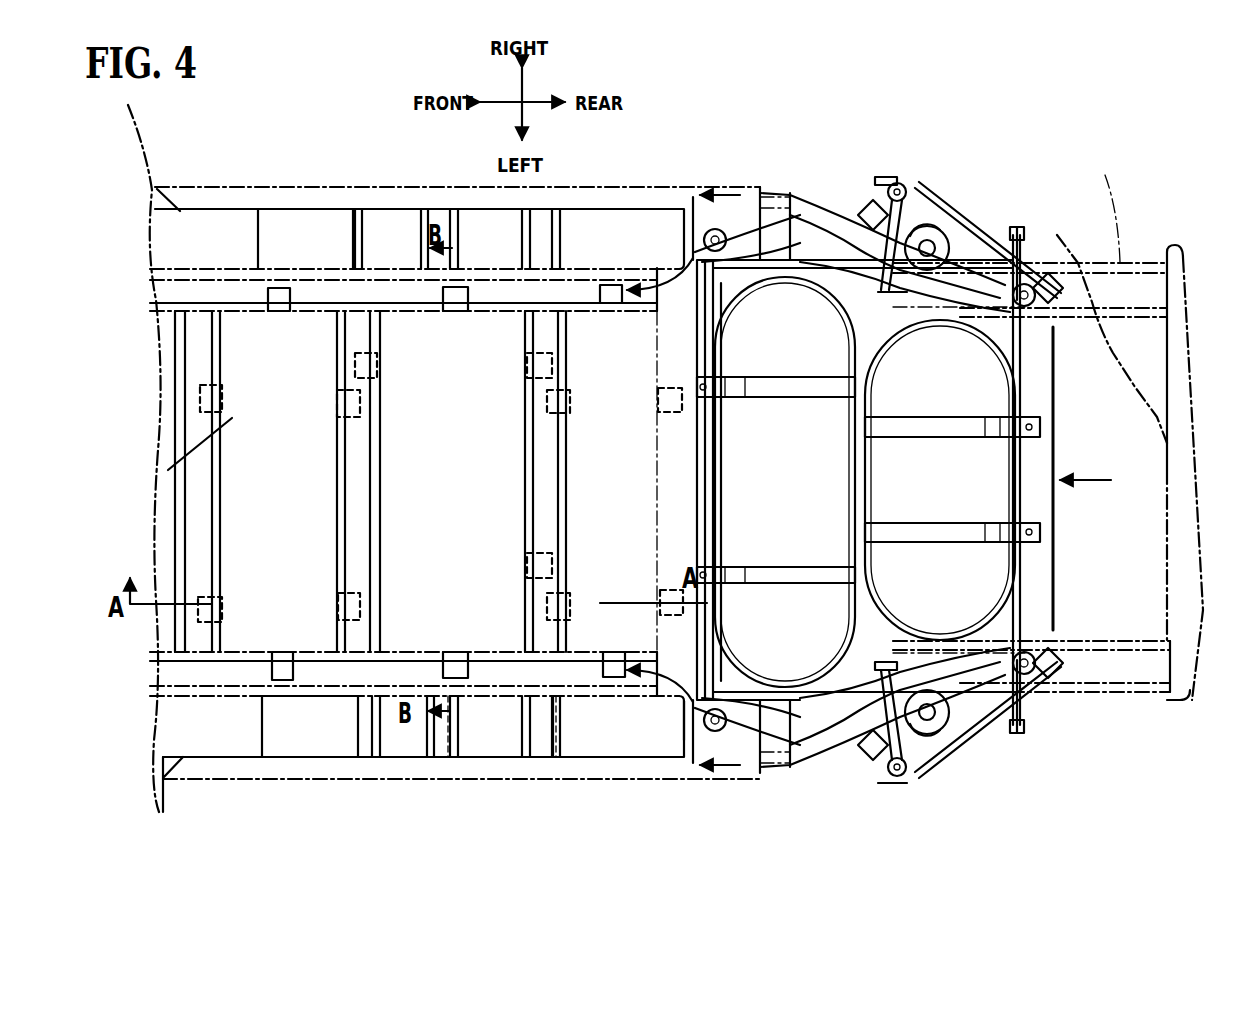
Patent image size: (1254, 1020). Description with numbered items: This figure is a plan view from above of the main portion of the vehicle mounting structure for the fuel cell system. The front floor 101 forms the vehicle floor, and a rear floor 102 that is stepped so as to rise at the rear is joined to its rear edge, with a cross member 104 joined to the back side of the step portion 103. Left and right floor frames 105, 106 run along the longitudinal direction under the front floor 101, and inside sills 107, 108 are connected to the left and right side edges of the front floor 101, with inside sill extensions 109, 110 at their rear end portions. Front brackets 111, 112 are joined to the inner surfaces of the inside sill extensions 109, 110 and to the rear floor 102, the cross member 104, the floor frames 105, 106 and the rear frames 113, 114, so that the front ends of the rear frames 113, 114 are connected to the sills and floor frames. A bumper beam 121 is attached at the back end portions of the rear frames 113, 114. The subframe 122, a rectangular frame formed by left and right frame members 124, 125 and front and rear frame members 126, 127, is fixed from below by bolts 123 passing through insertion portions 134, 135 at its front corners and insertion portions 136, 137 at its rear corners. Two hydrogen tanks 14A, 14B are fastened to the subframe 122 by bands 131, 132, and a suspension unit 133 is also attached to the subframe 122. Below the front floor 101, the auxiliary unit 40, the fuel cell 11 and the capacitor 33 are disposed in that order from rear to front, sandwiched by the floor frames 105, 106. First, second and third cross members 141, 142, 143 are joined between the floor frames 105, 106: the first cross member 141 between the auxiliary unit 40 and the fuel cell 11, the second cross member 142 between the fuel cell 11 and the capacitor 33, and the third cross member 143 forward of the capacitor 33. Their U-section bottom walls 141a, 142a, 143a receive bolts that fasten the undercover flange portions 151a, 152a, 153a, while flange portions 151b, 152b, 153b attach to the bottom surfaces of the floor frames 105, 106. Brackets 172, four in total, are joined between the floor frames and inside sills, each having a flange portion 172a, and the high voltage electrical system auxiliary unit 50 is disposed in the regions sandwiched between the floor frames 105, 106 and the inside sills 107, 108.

The fuel cell 11 is at (373, 780).
The capacitor 33 is at (286, 780).
The auxiliary unit 40 is at (598, 783).
The high voltage electrical system auxiliary unit 50 is at (310, 230).
The front floor 101 is at (172, 205).
The rear floor 102 is at (1130, 373).
The step portion 103 is at (694, 452).
The cross member 104 is at (697, 345).
The floor frame 105 is at (460, 652).
The floor frame 106 is at (456, 315).
The inside sill 107 is at (240, 783).
The inside sill 108 is at (402, 187).
The inside sill extension 109 is at (800, 790).
The inside sill extension 110 is at (812, 197).
The front bracket 111 is at (663, 783).
The front bracket 112 is at (672, 205).
The rear frame 113 is at (1098, 696).
The rear frame 114 is at (1095, 262).
The bumper beam 121 is at (1190, 588).
The subframe 122 is at (885, 175).
The bolt 123 is at (706, 230).
The left frame member 124 is at (842, 760).
The right frame member 125 is at (838, 196).
The front frame member 126 is at (708, 492).
The rear frame member 127 is at (1038, 448).
The band 131 is at (785, 380).
The band 132 is at (936, 417).
The suspension unit 133 is at (908, 190).
The insertion portion 134 is at (745, 790).
The insertion portion 135 is at (745, 185).
The insertion portion 136 is at (1058, 733).
The insertion portion 137 is at (1040, 232).
The first cross member 141 is at (522, 440).
The bottom wall 141a is at (568, 543).
The second cross member 142 is at (332, 440).
The bottom wall 142a is at (382, 465).
The third cross member 143 is at (172, 476).
The bottom wall 143a is at (222, 440).
The flange portion 151a is at (560, 412).
The flange portion 151b is at (612, 285).
The flange portion 152a is at (380, 397).
The flange portion 152b is at (518, 236).
The flange portion 153a is at (340, 392).
The flange portion 153b is at (275, 290).
The bracket 172 is at (378, 315).
The flange portion 172a is at (447, 783).
The hydrogen tank 14A is at (812, 456).
The hydrogen tank 14B is at (959, 488).